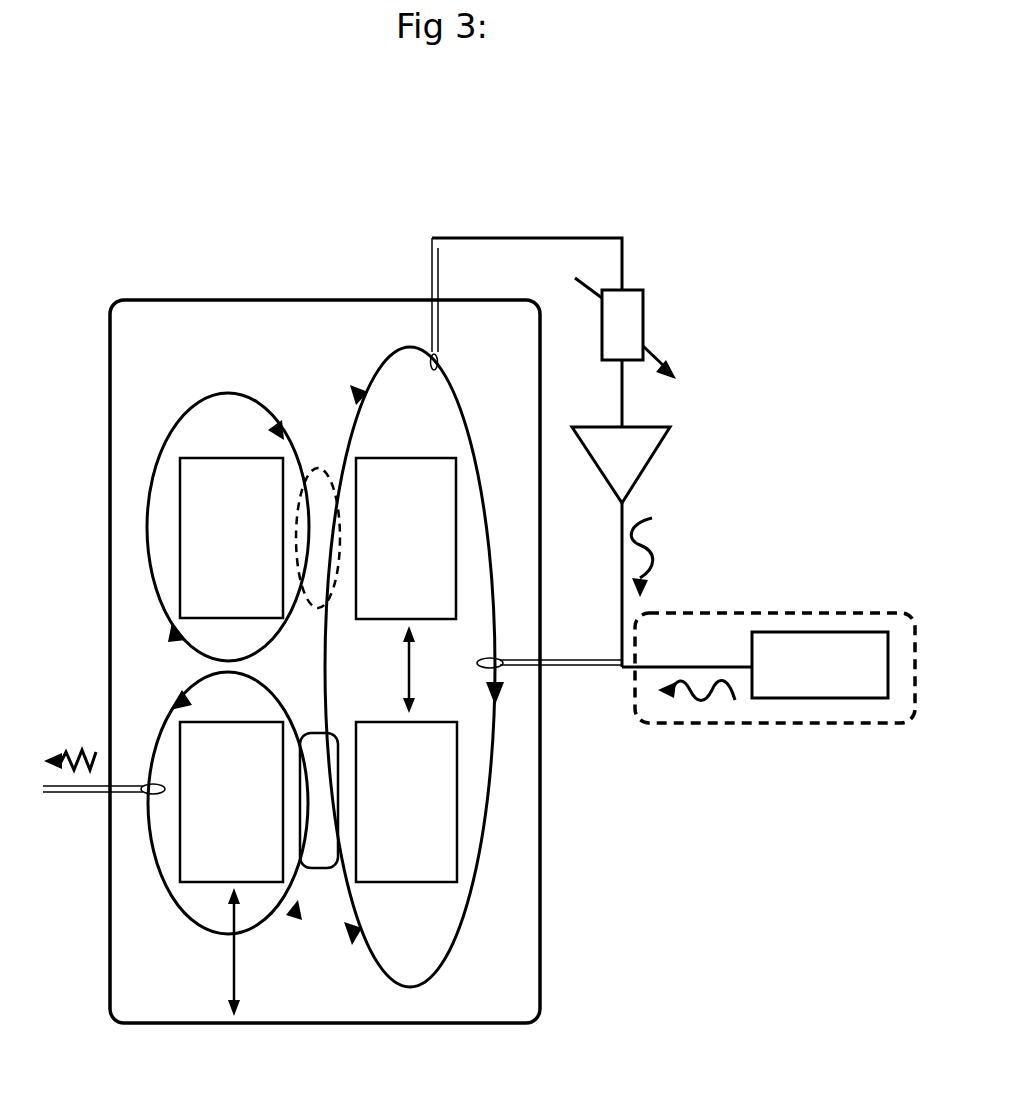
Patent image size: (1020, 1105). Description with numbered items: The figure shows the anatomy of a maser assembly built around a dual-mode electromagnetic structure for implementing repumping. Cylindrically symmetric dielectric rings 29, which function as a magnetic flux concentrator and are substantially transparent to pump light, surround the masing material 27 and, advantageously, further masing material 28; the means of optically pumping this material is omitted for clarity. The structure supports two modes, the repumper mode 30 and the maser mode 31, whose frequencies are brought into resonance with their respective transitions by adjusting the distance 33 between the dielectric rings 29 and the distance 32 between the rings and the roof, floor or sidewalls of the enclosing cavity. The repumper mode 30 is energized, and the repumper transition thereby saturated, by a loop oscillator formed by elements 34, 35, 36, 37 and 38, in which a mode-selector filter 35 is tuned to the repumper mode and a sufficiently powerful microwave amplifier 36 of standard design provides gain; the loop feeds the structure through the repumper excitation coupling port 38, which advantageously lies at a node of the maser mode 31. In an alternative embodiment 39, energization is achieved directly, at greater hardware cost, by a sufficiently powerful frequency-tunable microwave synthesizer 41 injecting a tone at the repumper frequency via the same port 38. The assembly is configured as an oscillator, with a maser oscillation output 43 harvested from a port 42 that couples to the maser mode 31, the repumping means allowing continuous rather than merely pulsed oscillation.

The masing material 27 is at (322, 868).
The masing material 28 is at (320, 468).
The dielectric rings 29 is at (318, 670).
The repumper mode 30 is at (478, 462).
The maser mode 31 is at (155, 595).
The distance between rings and cavity 32 is at (234, 975).
The distance between dielectric rings 33 is at (409, 690).
The loop oscillator 34 is at (430, 366).
The mode-selector filter 35 is at (643, 302).
The microwave amplifier 36 is at (655, 445).
The loop oscillator 37 is at (660, 530).
The repumper excitation coupling port 38 is at (500, 660).
The direct energization embodiment 39 is at (860, 613).
The frequency-tunable microwave synthesizer 41 is at (230, 300).
The port 42 is at (143, 800).
The maser oscillation output 43 is at (80, 745).